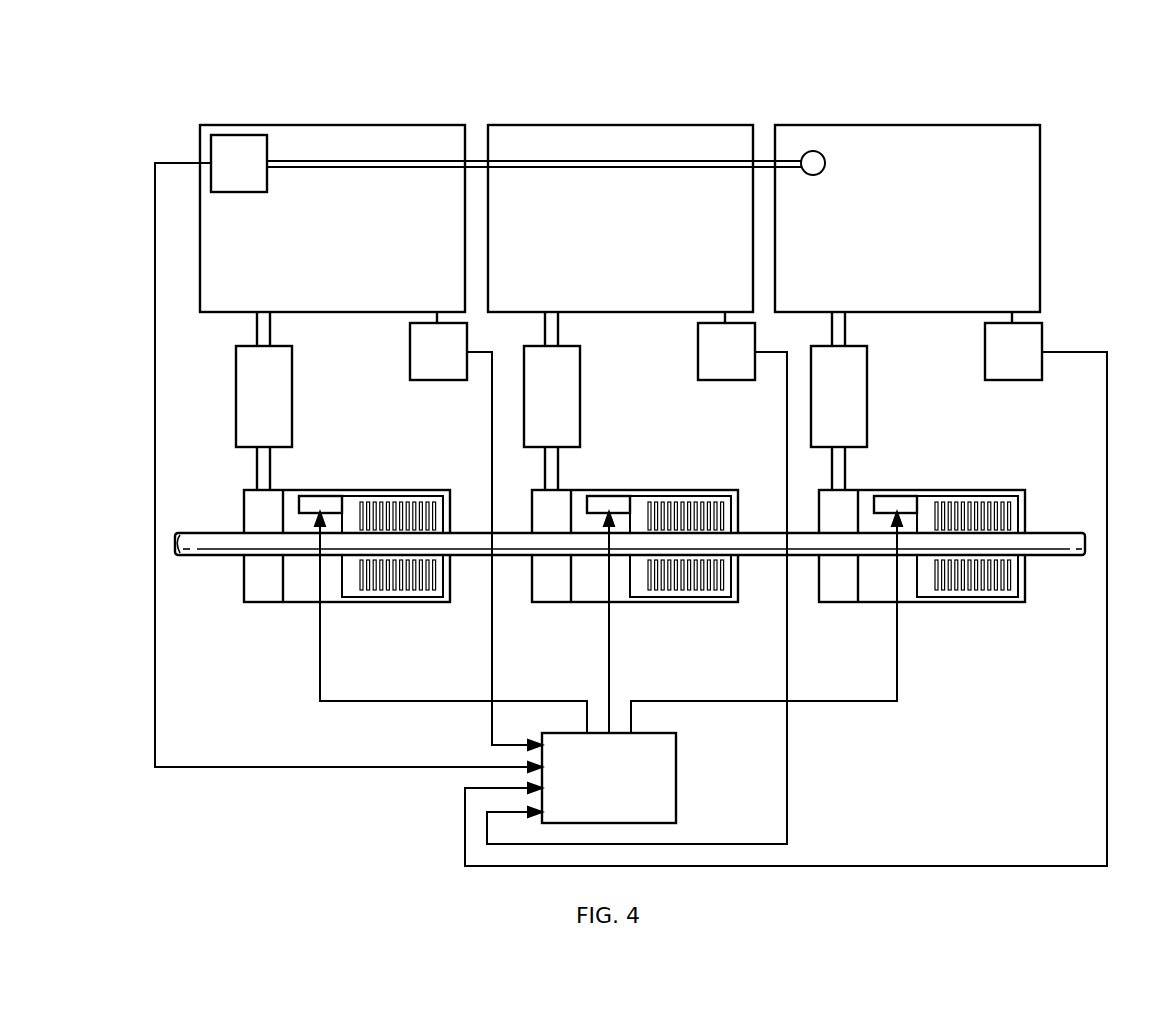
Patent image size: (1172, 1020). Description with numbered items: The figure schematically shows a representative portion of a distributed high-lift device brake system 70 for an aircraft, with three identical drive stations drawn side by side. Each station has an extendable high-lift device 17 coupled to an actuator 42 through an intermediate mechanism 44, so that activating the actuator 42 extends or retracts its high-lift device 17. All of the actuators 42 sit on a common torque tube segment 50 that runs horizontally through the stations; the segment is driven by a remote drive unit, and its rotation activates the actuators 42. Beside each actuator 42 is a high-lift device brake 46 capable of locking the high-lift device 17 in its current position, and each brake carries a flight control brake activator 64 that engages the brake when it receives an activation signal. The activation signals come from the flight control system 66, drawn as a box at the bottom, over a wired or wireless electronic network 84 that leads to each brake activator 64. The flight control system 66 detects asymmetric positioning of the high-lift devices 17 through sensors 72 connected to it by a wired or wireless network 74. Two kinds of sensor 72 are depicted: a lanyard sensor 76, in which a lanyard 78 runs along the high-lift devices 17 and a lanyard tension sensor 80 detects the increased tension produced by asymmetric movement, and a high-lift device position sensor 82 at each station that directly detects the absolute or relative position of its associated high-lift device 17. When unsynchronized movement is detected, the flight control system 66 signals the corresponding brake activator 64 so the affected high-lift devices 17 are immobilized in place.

The extendable high-lift device 17 is at (330, 123).
The actuator 42 is at (262, 603).
The intermediate mechanism 44 is at (236, 395).
The high-lift device brake 46 is at (385, 622).
The torque tube segment 50 is at (1048, 557).
The flight control brake activator 64 is at (300, 505).
The flight control system 66 is at (677, 777).
The distributed high-lift device brake system 70 is at (658, 436).
The sensor 72 is at (621, 237).
The wired or wireless network 74 is at (492, 630).
The lanyard sensor 76 is at (518, 148).
The lanyard 78 is at (627, 170).
The lanyard tension sensor 80 is at (240, 193).
The high-lift device position sensor 82 is at (437, 381).
The wired or wireless electronic network 84 is at (405, 703).